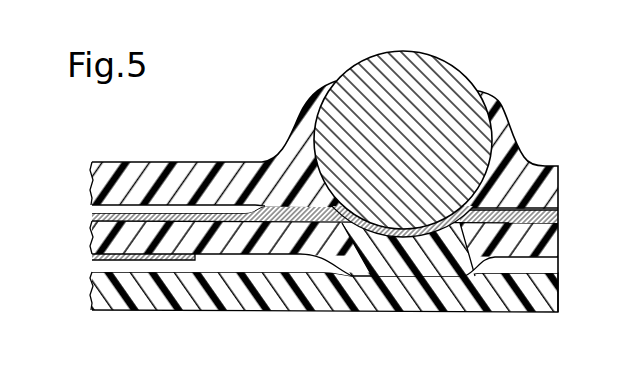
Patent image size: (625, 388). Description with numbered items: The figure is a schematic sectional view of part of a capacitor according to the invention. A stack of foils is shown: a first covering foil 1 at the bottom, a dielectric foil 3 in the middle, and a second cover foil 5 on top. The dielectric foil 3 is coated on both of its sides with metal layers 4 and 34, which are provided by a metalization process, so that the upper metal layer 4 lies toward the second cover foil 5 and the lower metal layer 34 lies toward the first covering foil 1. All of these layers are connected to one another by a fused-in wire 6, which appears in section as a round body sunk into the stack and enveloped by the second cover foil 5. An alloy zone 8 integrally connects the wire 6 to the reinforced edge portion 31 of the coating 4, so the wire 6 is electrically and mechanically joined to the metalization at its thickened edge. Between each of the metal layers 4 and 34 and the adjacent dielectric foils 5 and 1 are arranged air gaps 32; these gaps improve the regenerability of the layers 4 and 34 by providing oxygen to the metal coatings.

The first covering foil 1 is at (285, 299).
The dielectric foil 3 is at (301, 288).
The metal layer 4 is at (146, 225).
The second cover foil 5 is at (301, 196).
The fused-in wire 6 is at (444, 74).
The alloy zone 8 is at (409, 245).
The reinforced edge portion 31 is at (283, 207).
The air gap 32 is at (296, 275).
The metal layer 34 is at (148, 258).